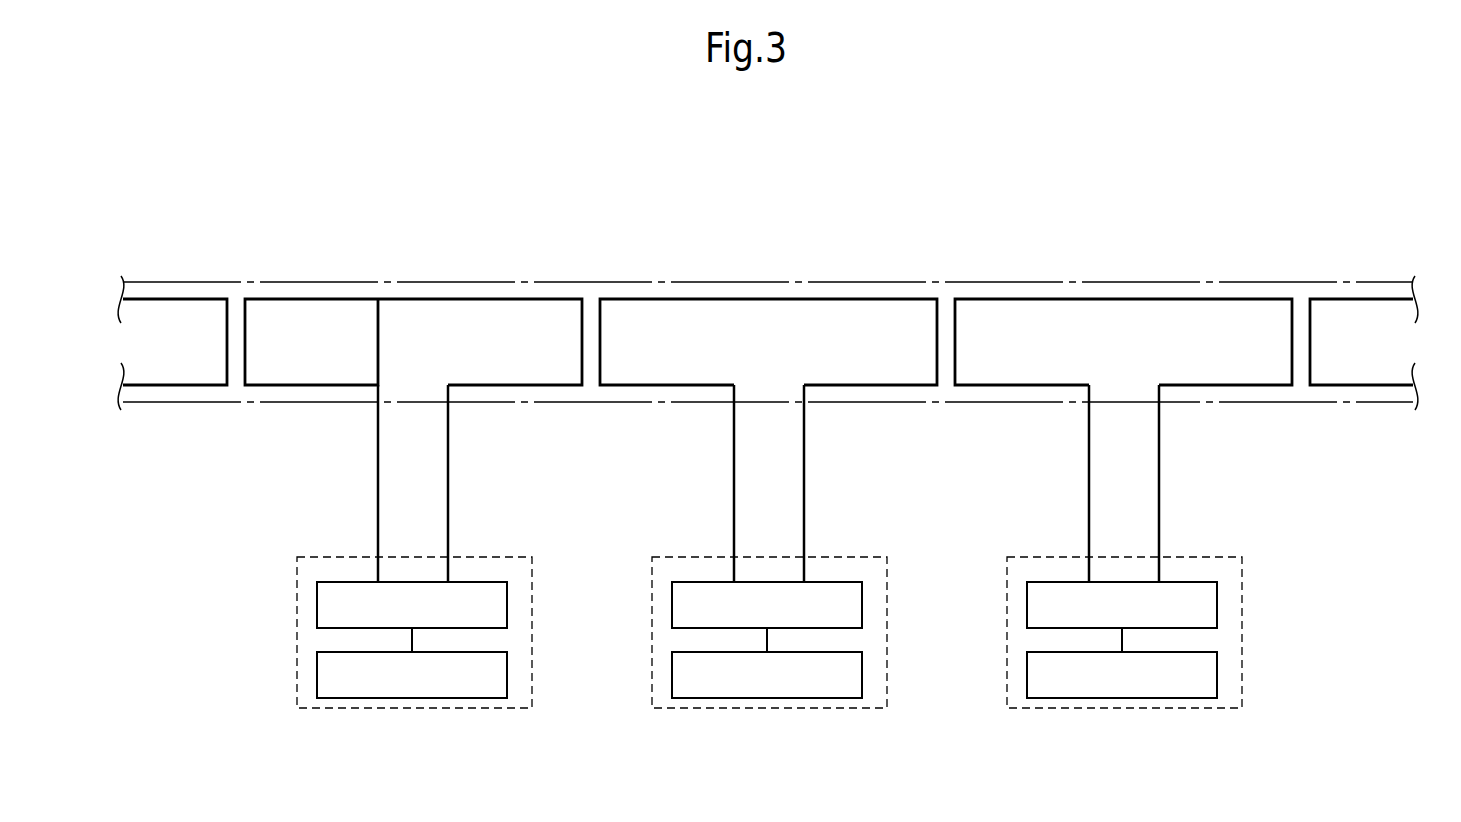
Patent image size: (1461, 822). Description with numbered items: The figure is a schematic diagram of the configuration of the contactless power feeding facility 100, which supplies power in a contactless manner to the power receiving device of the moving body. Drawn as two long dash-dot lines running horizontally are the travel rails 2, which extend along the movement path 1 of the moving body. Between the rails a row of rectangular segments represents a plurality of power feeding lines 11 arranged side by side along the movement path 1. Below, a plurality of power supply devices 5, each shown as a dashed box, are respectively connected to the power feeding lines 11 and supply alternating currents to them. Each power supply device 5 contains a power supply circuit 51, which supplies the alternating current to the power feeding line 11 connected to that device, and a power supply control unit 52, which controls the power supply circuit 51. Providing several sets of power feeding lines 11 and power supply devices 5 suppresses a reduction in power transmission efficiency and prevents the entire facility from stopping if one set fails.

The contactless power feeding facility 100 is at (1353, 168).
The movement path 1 is at (293, 264).
The travel rails 2 is at (550, 282).
The power feeding line 11 is at (170, 297).
The power supply device 5 is at (297, 572).
The power supply circuit 51 is at (317, 607).
The power supply control unit 52 is at (317, 665).